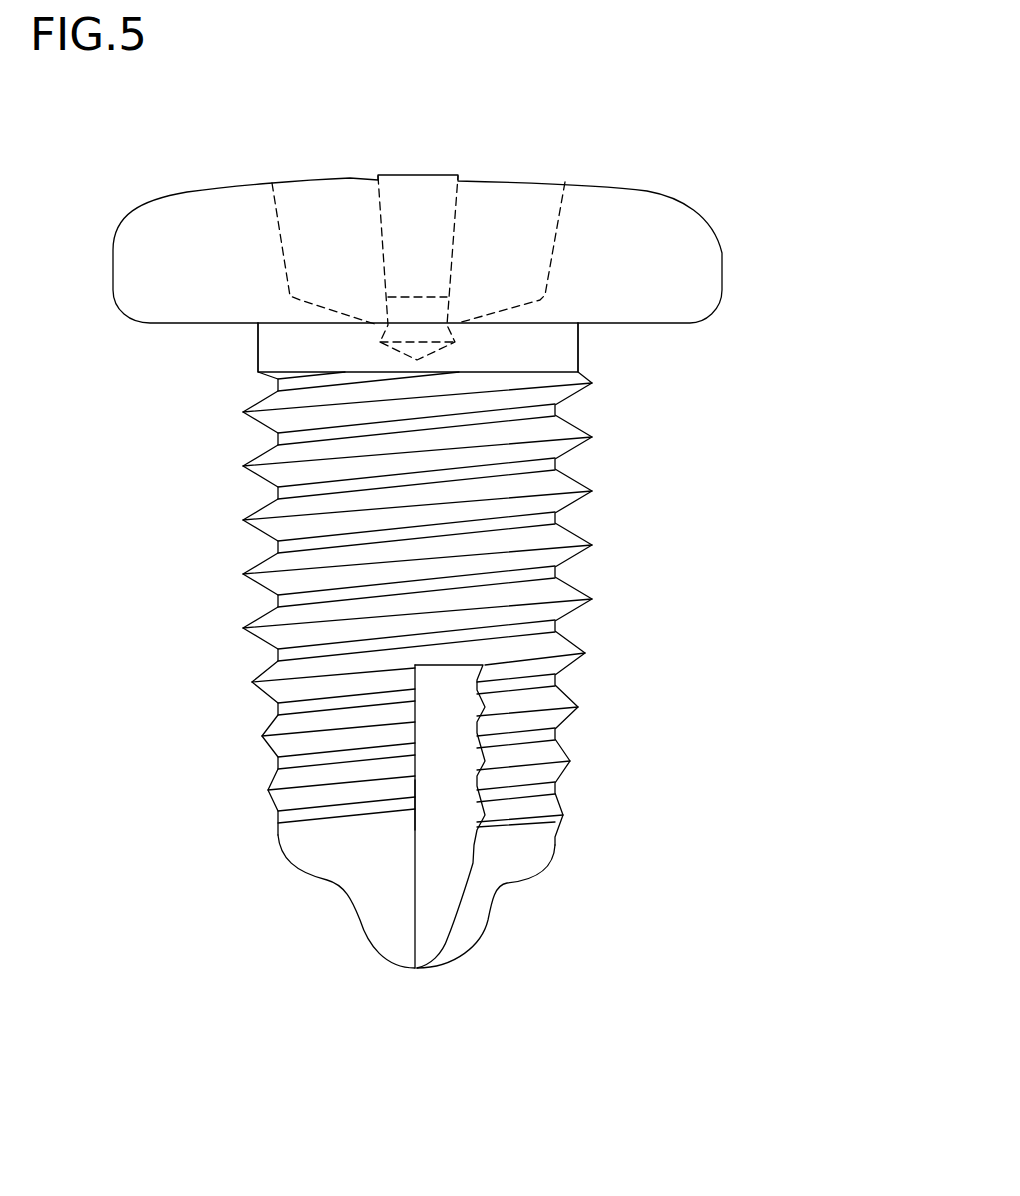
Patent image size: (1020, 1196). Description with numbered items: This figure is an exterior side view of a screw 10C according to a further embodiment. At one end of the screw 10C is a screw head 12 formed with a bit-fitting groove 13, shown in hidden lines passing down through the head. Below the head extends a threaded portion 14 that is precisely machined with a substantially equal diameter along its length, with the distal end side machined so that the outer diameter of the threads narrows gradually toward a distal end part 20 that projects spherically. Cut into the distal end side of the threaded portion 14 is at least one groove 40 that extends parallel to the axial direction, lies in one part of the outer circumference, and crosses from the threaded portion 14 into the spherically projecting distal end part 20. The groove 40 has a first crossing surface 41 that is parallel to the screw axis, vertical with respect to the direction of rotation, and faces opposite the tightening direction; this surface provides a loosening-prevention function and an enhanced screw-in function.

The screw 10C is at (612, 157).
The screw head 12 is at (667, 277).
The bit-fitting groove 13 is at (283, 247).
The threaded portion 14 is at (458, 497).
The distal end part 20 is at (323, 825).
The groove 40 is at (448, 842).
The first crossing surface 41 is at (417, 805).